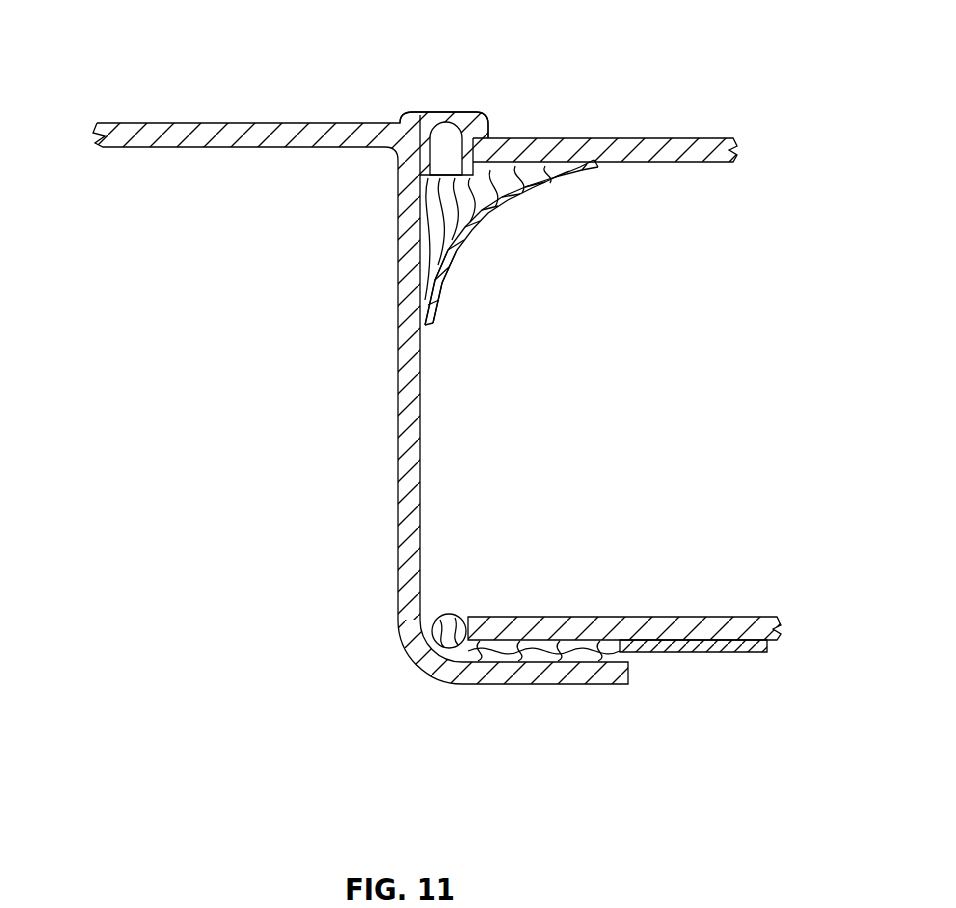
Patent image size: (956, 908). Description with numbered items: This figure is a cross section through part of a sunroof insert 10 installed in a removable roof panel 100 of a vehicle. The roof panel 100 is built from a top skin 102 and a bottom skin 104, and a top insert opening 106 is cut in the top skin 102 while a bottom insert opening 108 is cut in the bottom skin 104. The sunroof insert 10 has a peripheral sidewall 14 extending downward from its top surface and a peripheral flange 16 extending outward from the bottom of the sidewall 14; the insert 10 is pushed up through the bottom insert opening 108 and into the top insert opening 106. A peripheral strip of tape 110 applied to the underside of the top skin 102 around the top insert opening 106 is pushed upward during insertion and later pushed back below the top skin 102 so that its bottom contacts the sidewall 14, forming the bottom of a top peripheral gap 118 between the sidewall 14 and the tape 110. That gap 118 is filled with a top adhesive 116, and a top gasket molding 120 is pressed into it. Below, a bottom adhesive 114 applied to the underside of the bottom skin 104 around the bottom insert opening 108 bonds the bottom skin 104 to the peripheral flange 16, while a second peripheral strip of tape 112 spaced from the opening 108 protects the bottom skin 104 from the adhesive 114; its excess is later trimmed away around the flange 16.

The removable roof panel 100 is at (664, 64).
The sunroof insert 10 is at (270, 98).
The peripheral sidewall 14 is at (422, 423).
The peripheral flange 16 is at (530, 685).
The top gasket molding 120 is at (433, 111).
The top insert opening 106 is at (476, 148).
The top skin 102 is at (682, 163).
The peripheral strip of tape 110 is at (542, 187).
The top adhesive 116 is at (464, 240).
The top peripheral gap 118 is at (435, 208).
The bottom skin 104 is at (600, 619).
The second peripheral strip of tape 112 is at (672, 657).
The bottom adhesive 114 is at (606, 668).
The bottom insert opening 108 is at (462, 632).